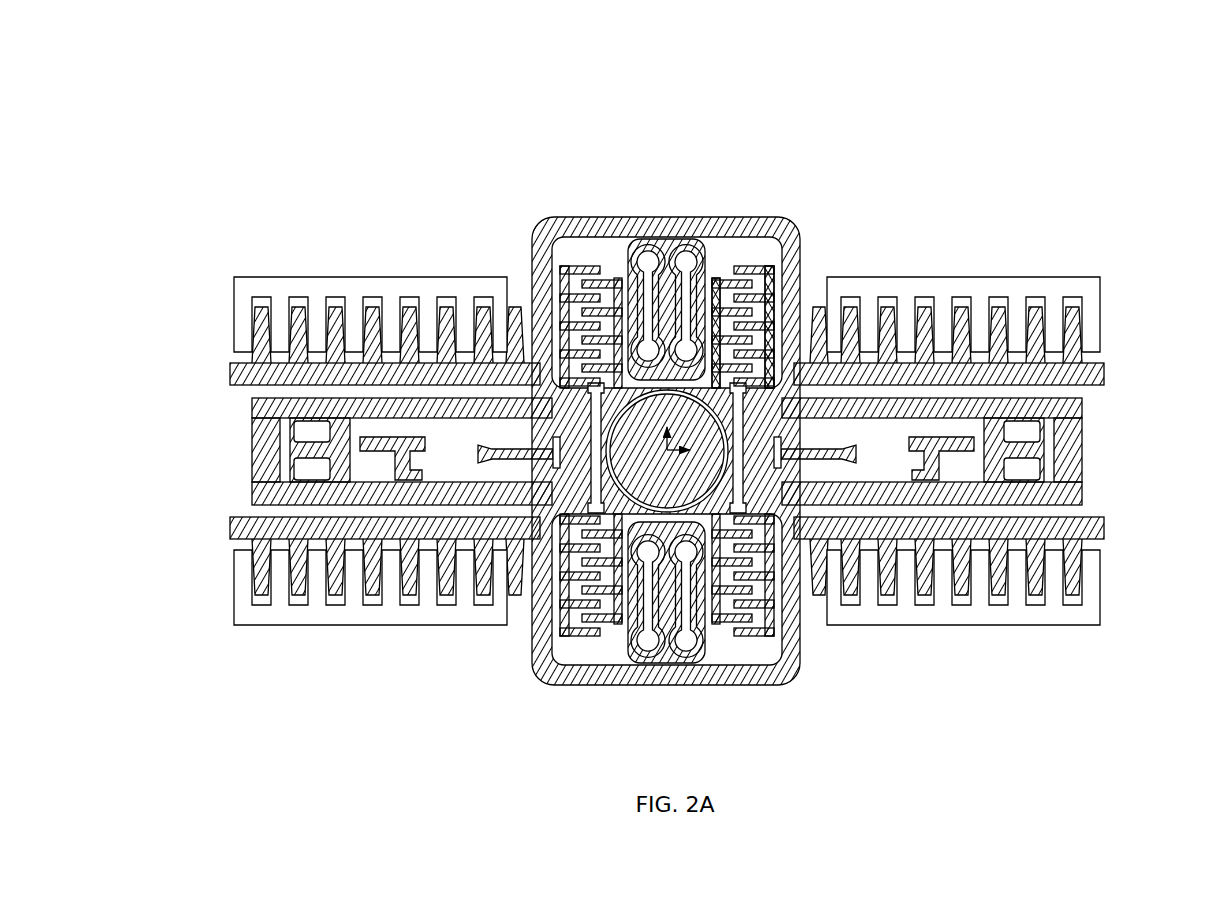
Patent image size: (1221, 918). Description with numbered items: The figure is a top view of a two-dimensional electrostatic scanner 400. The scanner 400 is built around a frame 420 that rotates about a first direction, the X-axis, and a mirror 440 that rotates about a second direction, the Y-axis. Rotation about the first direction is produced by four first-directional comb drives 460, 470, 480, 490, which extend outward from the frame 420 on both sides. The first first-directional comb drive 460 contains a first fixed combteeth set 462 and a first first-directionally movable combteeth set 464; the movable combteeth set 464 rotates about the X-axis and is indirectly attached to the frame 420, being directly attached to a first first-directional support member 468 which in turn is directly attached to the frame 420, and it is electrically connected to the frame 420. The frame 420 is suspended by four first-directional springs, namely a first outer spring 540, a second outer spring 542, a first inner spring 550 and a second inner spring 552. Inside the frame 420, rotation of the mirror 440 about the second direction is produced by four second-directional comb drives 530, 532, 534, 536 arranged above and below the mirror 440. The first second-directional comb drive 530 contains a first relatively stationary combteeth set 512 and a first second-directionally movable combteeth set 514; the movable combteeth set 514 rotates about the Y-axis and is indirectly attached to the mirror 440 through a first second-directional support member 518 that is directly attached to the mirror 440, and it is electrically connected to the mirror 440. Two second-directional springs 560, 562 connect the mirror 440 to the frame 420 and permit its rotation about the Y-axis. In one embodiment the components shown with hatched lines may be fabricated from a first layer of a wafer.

The two-dimensional electrostatic scanner 400 is at (976, 127).
The frame 420 is at (795, 280).
The mirror 440 is at (707, 423).
The first first-directional comb drive 460 is at (990, 331).
The first fixed combteeth set 462 is at (1104, 337).
The first first-directionally movable combteeth set 464 is at (1096, 353).
The first first-directional support member 468 is at (1086, 374).
The first-directional comb drive 470 is at (213, 325).
The first-directional comb drive 480 is at (212, 574).
The first-directional comb drive 490 is at (1122, 580).
The first relatively stationary combteeth set 512 is at (791, 280).
The first second-directionally movable combteeth set 514 is at (742, 264).
The first second-directional support member 518 is at (712, 322).
The first second-directional comb drive 530 is at (749, 257).
The second-directional comb drive 532 is at (580, 266).
The second-directional comb drive 534 is at (581, 639).
The second-directional comb drive 536 is at (743, 639).
The first outer spring 540 is at (973, 443).
The second outer spring 542 is at (353, 442).
The first inner spring 550 is at (810, 452).
The second inner spring 552 is at (522, 452).
The second-directional spring 560 is at (665, 262).
The second-directional spring 562 is at (665, 672).